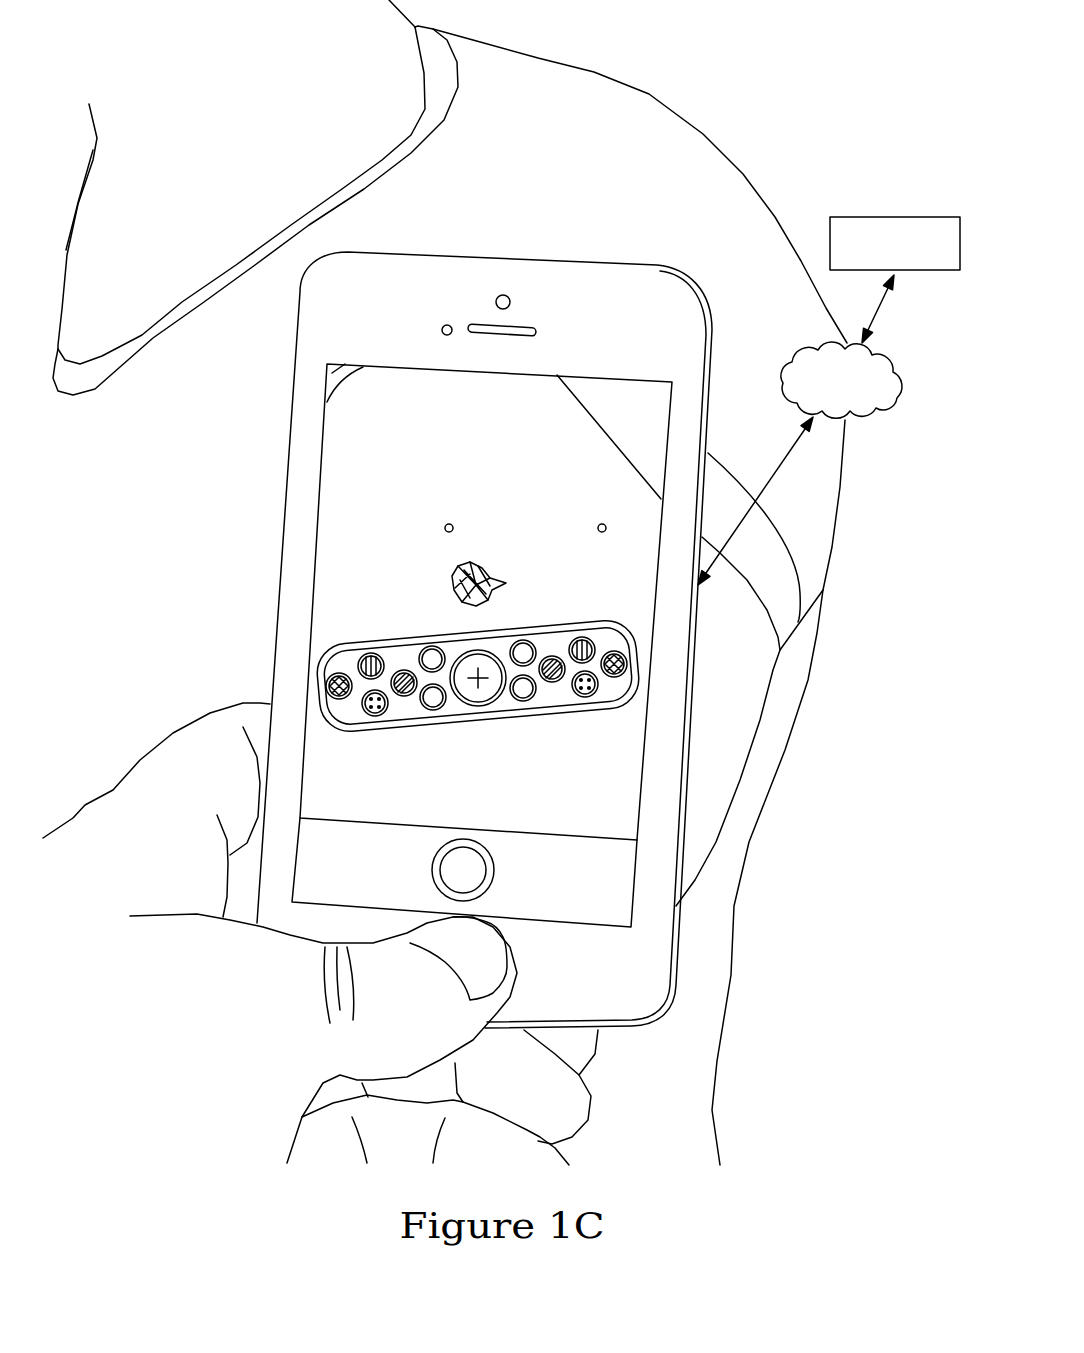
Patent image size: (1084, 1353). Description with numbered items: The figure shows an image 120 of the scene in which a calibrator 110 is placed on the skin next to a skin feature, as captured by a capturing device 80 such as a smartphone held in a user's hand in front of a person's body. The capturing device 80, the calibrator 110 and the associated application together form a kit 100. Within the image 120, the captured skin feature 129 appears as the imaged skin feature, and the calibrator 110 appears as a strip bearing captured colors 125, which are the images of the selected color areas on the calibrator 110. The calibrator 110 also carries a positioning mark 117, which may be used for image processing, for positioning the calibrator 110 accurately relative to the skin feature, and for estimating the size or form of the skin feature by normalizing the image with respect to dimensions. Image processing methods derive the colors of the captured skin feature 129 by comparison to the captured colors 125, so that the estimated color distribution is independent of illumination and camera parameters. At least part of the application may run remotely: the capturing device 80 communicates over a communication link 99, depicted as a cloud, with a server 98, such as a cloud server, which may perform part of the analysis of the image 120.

The capturing device 80 is at (455, 608).
The kit 100 is at (190, 426).
The captured skin feature 129 is at (459, 571).
The image 120 is at (359, 583).
The calibrator 110 is at (419, 707).
The positioning mark 117 is at (468, 704).
The captured colors 125 is at (551, 683).
The server 98 is at (892, 214).
The communication link 99 is at (810, 350).